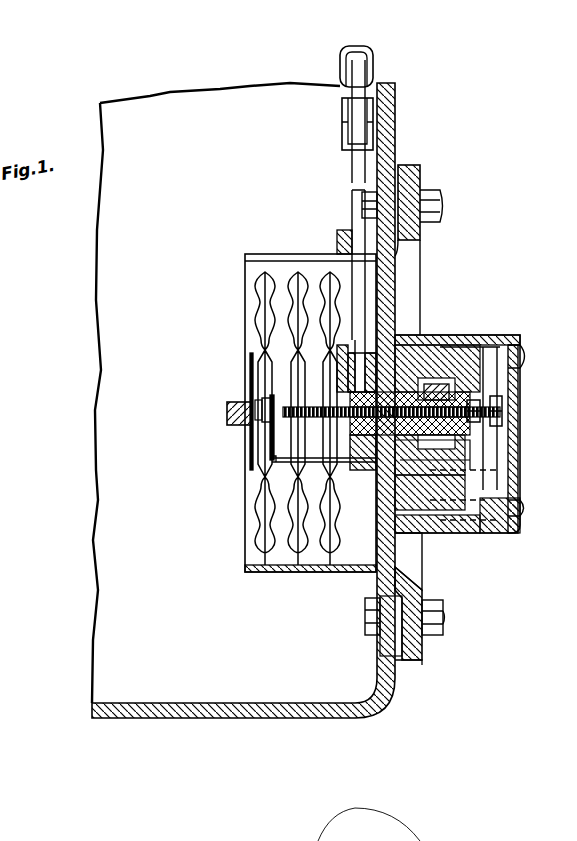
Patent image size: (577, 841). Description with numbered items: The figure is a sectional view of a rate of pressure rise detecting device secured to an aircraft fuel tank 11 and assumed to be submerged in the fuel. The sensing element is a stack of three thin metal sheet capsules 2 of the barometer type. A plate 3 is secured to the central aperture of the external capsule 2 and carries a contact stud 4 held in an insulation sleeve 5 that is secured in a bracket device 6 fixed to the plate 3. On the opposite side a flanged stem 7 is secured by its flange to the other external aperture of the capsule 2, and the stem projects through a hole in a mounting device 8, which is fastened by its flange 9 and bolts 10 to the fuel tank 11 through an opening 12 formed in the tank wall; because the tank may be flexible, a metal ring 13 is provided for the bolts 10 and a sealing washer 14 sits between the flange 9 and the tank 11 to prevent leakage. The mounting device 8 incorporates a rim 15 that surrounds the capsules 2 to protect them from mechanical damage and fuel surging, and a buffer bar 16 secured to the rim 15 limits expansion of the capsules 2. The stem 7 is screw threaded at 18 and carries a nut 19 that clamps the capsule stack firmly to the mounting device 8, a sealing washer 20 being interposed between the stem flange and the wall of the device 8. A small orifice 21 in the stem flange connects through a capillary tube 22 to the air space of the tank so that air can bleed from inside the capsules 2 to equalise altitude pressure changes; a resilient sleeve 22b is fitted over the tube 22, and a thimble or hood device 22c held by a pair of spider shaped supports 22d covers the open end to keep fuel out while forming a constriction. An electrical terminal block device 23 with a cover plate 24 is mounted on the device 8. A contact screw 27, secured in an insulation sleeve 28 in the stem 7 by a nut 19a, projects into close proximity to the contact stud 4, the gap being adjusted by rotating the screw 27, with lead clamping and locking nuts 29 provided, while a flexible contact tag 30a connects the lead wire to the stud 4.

The capsules 2 is at (330, 550).
The plate 3 is at (272, 452).
The contact stud 4 is at (278, 406).
The insulation sleeve 5 is at (267, 398).
The bracket device 6 is at (252, 400).
The flanged stem 7 is at (352, 472).
The mounting device 8 is at (390, 548).
The flange 9 is at (420, 650).
The bolts 10 is at (444, 618).
The fuel tank 11 is at (388, 700).
The opening 12 is at (377, 594).
The metal ring 13 is at (382, 655).
The sealing washer 14 is at (405, 660).
The rim 15 is at (250, 572).
The buffer bar 16 is at (227, 410).
The screw thread 18 is at (482, 340).
The nut 19 is at (420, 372).
The nut 19a is at (468, 441).
The sealing washer 20 is at (362, 372).
The orifice 21 is at (345, 382).
The capillary tube 22 is at (352, 192).
The resilient sleeve 22b is at (414, 243).
The thimble or hood device 22c is at (375, 58).
The spider shaped supports 22d is at (343, 113).
The electrical terminal block device 23 is at (523, 349).
The cover plate 24 is at (515, 383).
The contact screw 27 is at (268, 447).
The insulation sleeve 28 is at (495, 440).
The electrical lead clamping and locking nuts 29 is at (478, 396).
The flexible contact tag 30a is at (262, 462).